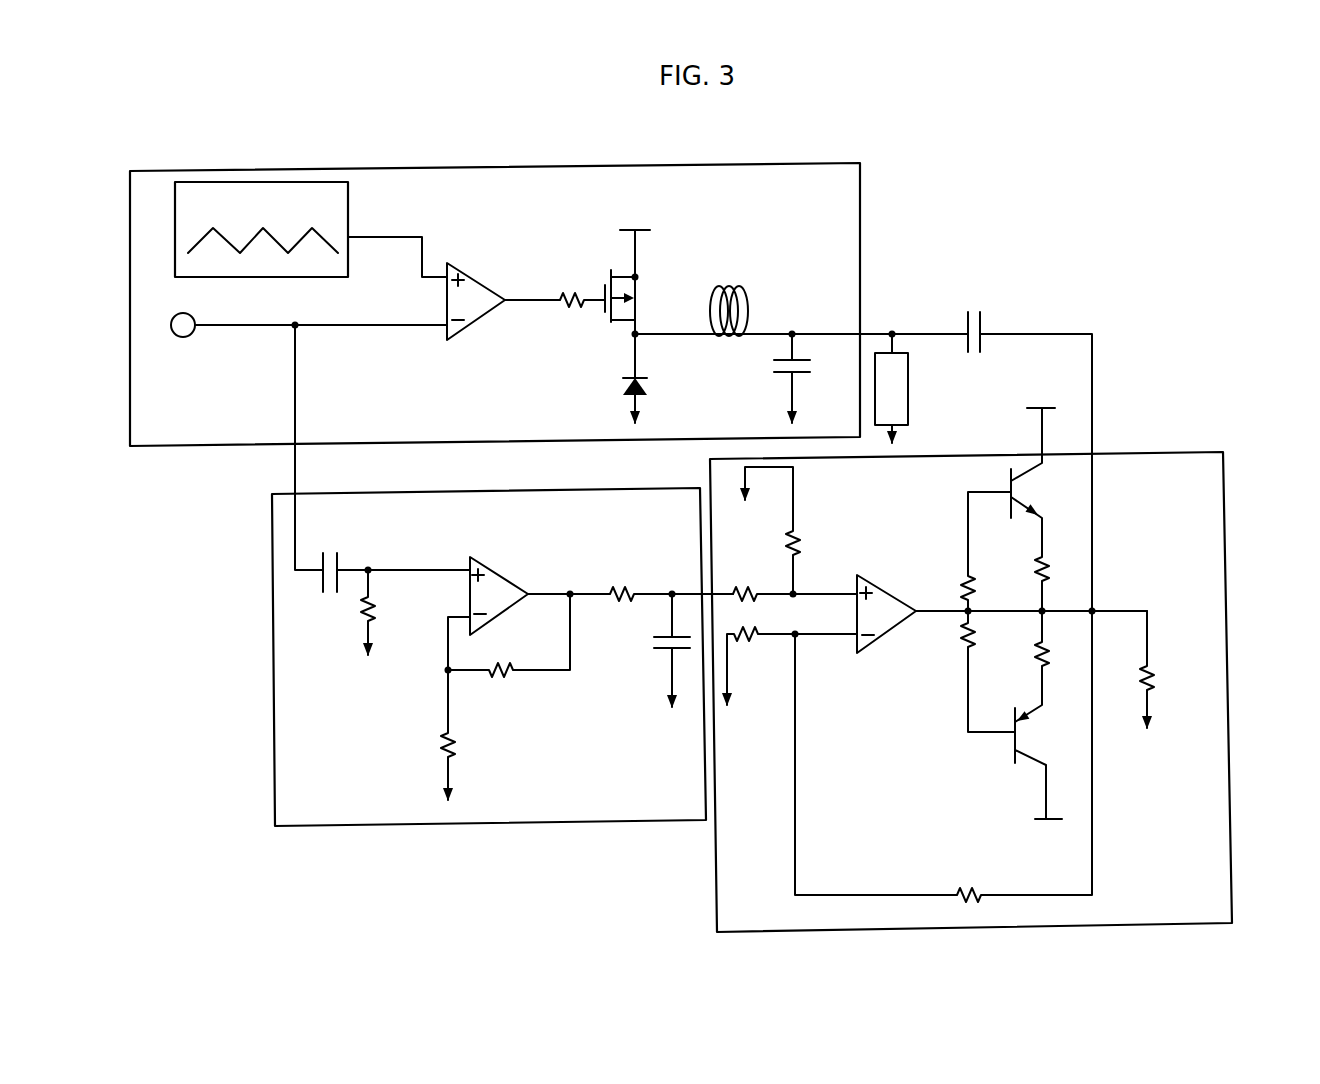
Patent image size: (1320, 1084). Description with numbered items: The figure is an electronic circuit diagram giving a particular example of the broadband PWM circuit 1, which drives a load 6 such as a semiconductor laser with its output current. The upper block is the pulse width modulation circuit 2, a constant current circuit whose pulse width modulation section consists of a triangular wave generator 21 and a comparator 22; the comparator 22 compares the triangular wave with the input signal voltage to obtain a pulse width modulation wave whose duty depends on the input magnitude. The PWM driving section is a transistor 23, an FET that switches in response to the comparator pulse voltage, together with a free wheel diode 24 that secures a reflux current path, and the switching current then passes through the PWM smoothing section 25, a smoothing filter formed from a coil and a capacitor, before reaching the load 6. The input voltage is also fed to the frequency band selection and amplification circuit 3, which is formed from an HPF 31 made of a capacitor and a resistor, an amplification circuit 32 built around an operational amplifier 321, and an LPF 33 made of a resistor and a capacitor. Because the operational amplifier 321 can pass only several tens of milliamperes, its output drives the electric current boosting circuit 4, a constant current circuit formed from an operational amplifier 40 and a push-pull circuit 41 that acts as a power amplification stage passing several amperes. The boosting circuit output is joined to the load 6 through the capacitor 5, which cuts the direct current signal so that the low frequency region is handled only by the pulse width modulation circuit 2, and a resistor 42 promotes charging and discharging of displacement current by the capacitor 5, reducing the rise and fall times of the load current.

The broadband PWM circuit 1 is at (1118, 232).
The pulse width modulation circuit 2 is at (860, 212).
The frequency band selection and amplification circuit 3 is at (478, 823).
The electric current boosting circuit 4 is at (1232, 648).
The capacitor 5 is at (982, 320).
The load 6 is at (910, 400).
The triangular wave generator 21 is at (305, 128).
The comparator 22 is at (447, 297).
The transistor 23 is at (611, 274).
The free wheel diode 24 is at (630, 388).
The PWM smoothing section 25 is at (765, 322).
The HPF 31 is at (332, 600).
The amplification circuit 32 is at (505, 690).
The LPF 33 is at (638, 642).
The operational amplifier 40 is at (890, 632).
The push-pull circuit 41 is at (955, 751).
The resistor 42 is at (1147, 666).
The operational amplifier 321 is at (507, 566).